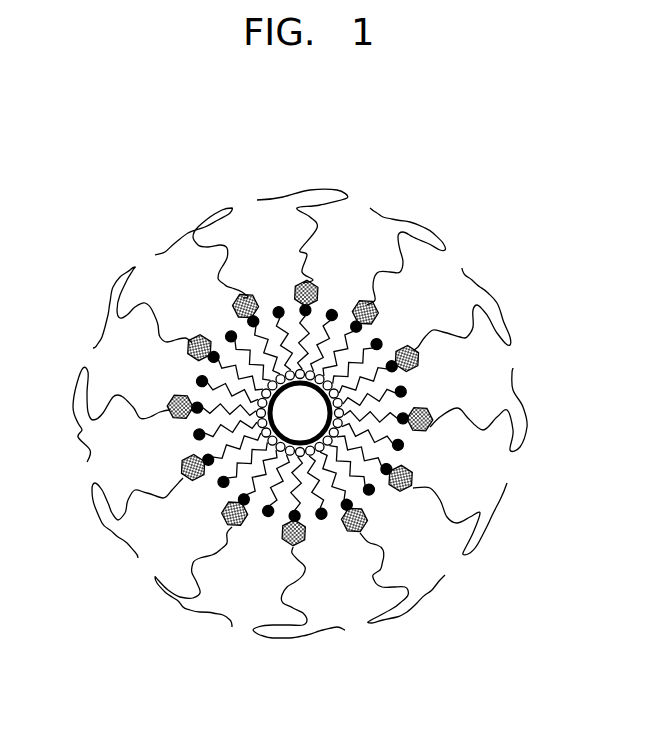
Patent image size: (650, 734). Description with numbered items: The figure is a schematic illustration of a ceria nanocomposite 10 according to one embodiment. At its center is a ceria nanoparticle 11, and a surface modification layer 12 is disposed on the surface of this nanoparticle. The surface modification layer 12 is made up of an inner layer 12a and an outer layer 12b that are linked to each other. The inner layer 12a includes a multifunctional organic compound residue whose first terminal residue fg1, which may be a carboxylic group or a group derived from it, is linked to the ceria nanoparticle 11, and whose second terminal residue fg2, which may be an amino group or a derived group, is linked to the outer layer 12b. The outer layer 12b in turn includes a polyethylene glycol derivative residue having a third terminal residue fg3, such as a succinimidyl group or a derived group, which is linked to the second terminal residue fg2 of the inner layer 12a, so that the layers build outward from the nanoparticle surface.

The ceria nanocomposite 10 is at (492, 216).
The ceria nanoparticle 11 is at (295, 420).
The surface modification layer 12 is at (300, 451).
The inner layer 12a is at (211, 495).
The outer layer 12b is at (180, 608).
The first terminal residue fg1 is at (321, 373).
The second terminal residue fg2 is at (410, 390).
The third terminal residue fg3 is at (425, 427).